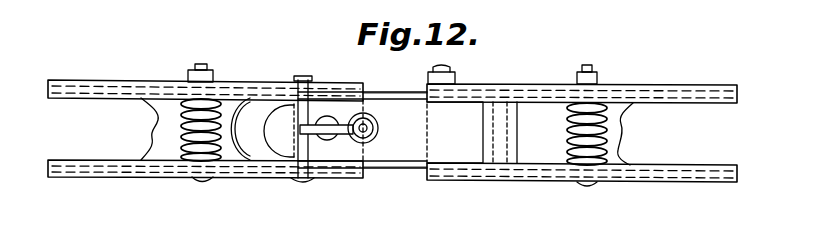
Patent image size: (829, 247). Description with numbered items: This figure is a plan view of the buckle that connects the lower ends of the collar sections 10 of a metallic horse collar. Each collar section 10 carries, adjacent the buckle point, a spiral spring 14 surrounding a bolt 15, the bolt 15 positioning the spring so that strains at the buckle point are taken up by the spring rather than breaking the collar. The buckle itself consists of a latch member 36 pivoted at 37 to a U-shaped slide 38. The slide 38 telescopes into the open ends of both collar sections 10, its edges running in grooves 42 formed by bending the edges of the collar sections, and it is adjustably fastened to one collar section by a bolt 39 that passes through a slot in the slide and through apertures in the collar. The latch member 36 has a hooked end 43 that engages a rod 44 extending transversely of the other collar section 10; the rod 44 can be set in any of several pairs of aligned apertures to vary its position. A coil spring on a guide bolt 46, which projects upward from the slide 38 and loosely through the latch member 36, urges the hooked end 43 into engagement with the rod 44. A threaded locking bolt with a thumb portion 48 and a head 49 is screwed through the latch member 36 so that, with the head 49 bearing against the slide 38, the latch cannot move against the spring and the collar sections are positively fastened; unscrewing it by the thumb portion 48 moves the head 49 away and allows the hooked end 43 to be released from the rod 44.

The collar section 10 is at (677, 85).
The spiral spring 14 is at (208, 105).
The bolt 15 is at (197, 160).
The latch member 36 is at (417, 148).
The pivot 37 is at (503, 139).
The slide 38 is at (388, 170).
The bolt 39 is at (446, 66).
The groove 42 is at (248, 93).
The hooked end 43 is at (283, 143).
The rod 44 is at (305, 113).
The guide bolt 46 is at (378, 128).
The thumb portion 48 is at (342, 140).
The head 49 is at (332, 120).